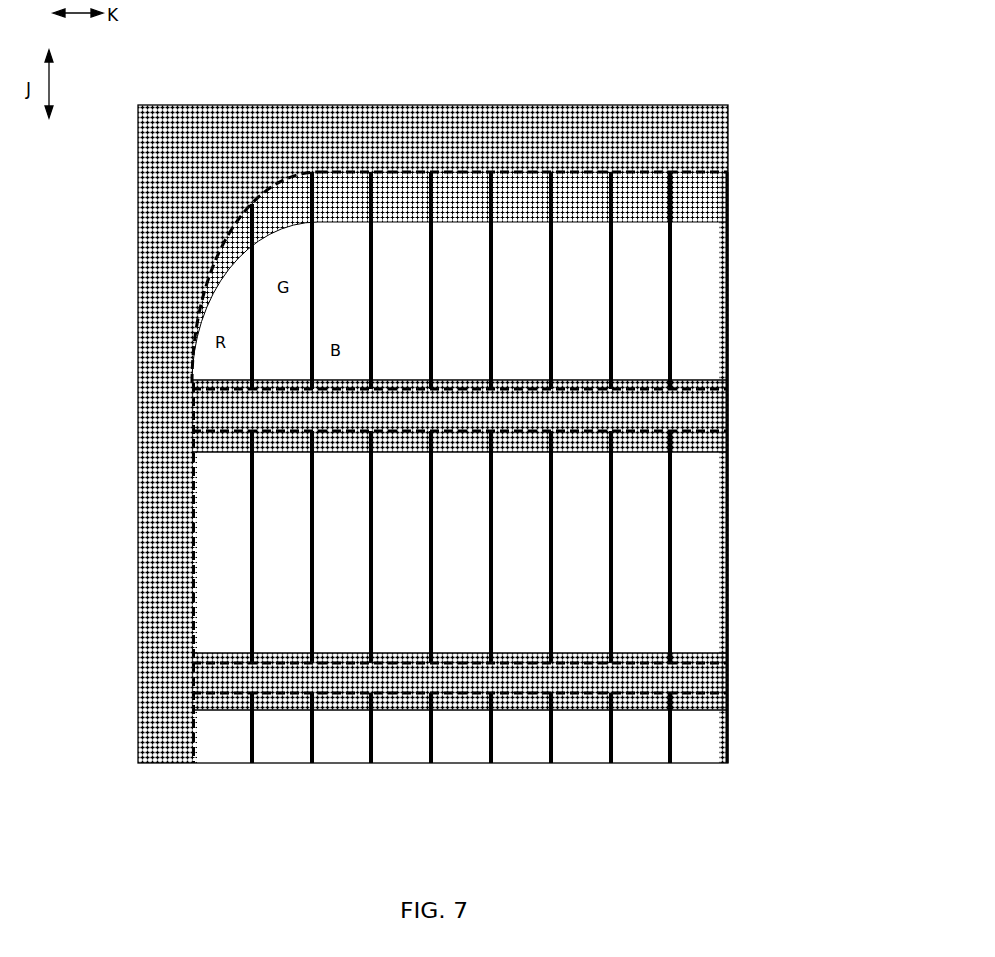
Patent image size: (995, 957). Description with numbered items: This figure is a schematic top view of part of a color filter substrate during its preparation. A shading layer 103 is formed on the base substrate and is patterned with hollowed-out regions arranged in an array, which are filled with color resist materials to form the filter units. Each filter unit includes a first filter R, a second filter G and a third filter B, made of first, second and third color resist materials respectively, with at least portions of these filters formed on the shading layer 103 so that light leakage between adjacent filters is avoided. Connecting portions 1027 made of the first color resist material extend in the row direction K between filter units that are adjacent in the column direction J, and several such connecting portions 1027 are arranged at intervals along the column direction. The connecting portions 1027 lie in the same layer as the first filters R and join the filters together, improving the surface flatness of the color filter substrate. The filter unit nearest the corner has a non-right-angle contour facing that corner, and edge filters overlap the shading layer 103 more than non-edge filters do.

The shading layer 103 is at (168, 231).
The connecting portion 1027 is at (730, 404).